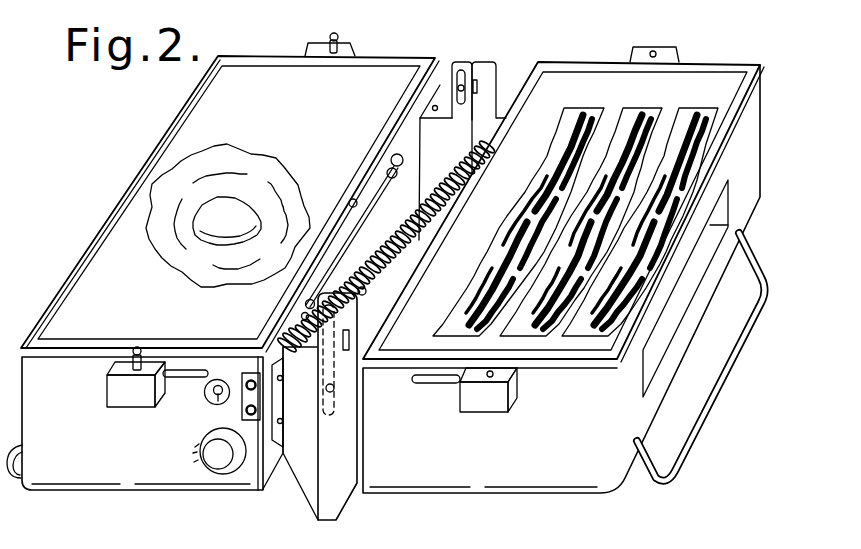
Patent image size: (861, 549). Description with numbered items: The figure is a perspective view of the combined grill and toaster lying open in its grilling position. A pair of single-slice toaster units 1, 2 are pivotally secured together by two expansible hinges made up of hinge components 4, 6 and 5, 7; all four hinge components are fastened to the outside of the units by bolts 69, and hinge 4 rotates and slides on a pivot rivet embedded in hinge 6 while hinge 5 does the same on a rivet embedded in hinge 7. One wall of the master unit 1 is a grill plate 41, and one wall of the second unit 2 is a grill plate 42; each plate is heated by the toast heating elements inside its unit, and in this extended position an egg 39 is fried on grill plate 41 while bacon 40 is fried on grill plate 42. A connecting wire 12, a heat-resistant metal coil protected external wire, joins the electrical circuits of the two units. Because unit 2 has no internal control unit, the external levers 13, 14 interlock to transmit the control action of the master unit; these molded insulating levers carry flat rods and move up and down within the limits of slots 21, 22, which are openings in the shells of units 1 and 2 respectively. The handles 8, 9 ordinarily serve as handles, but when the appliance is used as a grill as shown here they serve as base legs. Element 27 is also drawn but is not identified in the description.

The toaster unit 1 is at (143, 478).
The toaster unit 2 is at (489, 479).
The expansible hinge 4 is at (304, 480).
The expansible hinge 5 is at (458, 66).
The expansible hinge 6 is at (343, 486).
The expansible hinge 7 is at (491, 72).
The handle 8 is at (15, 479).
The handle 9 is at (712, 397).
The connecting wire 12 is at (389, 250).
The external lever 13 is at (118, 393).
The external lever 14 is at (512, 396).
The slot 21 is at (186, 377).
The slot 22 is at (440, 383).
The support plate 27 is at (686, 297).
The egg 39 is at (282, 190).
The bacon 40 is at (540, 175).
The grill plate 41 is at (357, 82).
The grill plate 42 is at (696, 84).
The bolts 69 is at (283, 413).